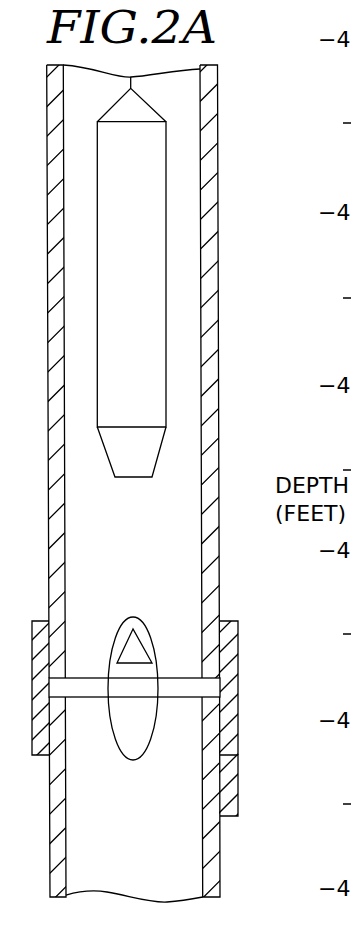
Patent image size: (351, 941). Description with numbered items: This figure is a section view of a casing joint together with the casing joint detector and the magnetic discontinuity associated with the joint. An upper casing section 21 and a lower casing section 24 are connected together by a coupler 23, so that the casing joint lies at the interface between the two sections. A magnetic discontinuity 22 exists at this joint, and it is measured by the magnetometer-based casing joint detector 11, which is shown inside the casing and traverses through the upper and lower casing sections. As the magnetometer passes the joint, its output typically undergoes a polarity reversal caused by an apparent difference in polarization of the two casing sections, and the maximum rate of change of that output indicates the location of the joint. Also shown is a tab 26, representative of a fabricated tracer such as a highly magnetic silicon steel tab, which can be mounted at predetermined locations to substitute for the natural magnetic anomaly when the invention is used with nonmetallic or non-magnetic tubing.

The casing joint detector 11 is at (168, 240).
The upper casing section 21 is at (222, 110).
The magnetic discontinuity 22 is at (150, 625).
The coupler 23 is at (245, 698).
The lower casing section 24 is at (222, 850).
The tab 26 is at (238, 780).